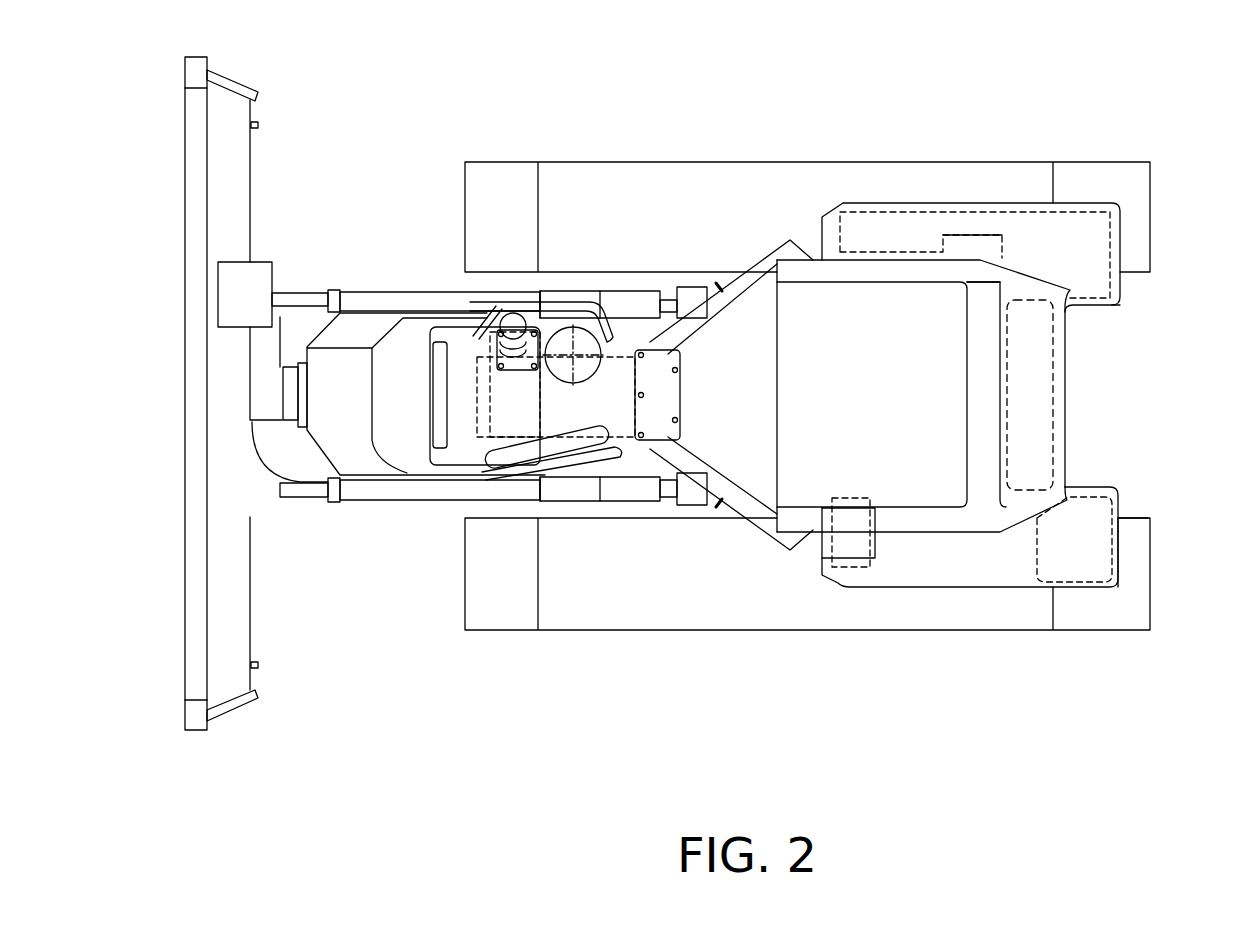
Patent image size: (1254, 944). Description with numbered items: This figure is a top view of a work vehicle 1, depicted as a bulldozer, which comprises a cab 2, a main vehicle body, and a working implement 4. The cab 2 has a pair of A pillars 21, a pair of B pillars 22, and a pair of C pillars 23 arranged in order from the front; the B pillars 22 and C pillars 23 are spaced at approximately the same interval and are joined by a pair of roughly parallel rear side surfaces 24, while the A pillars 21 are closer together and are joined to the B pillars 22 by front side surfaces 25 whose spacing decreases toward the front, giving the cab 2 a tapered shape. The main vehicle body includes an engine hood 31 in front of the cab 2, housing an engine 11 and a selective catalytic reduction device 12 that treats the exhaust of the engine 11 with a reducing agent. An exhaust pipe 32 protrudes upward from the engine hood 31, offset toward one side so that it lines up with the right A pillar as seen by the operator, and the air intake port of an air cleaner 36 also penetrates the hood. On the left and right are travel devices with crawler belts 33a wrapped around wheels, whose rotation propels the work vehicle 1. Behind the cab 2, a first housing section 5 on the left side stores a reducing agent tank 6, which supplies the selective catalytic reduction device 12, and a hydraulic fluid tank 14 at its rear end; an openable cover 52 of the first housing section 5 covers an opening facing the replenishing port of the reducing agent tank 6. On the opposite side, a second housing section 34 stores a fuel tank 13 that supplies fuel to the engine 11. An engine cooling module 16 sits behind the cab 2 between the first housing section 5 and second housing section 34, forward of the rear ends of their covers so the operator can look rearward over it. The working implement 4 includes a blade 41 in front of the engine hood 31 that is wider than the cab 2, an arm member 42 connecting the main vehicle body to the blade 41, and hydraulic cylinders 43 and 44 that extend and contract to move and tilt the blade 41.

The work vehicle 1 is at (603, 120).
The cab 2 is at (778, 238).
The working implement 4 is at (317, 213).
The first housing section 5 is at (1117, 577).
The reducing agent tank 6 is at (850, 567).
The engine 11 is at (636, 464).
The selective catalytic reduction device 12 is at (505, 467).
The fuel tank 13 is at (1080, 195).
The hydraulic fluid tank 14 is at (1122, 527).
The engine cooling module 16 is at (1050, 367).
The A pillars 21 is at (627, 290).
The B pillars 22 is at (780, 246).
The C pillars 23 is at (983, 257).
The rear side surfaces 24 is at (893, 257).
The front side surfaces 25 is at (705, 270).
The engine hood 31 is at (460, 410).
The exhaust pipe 32 is at (487, 293).
The crawler belt 33a is at (683, 200).
The second housing section 34 is at (1120, 293).
The air cleaner 36 is at (537, 292).
The blade 41 is at (186, 445).
The arm member 42 is at (333, 423).
The hydraulic cylinder 43 is at (352, 292).
The hydraulic cylinder 44 is at (550, 290).
The openable cover 52 is at (875, 550).